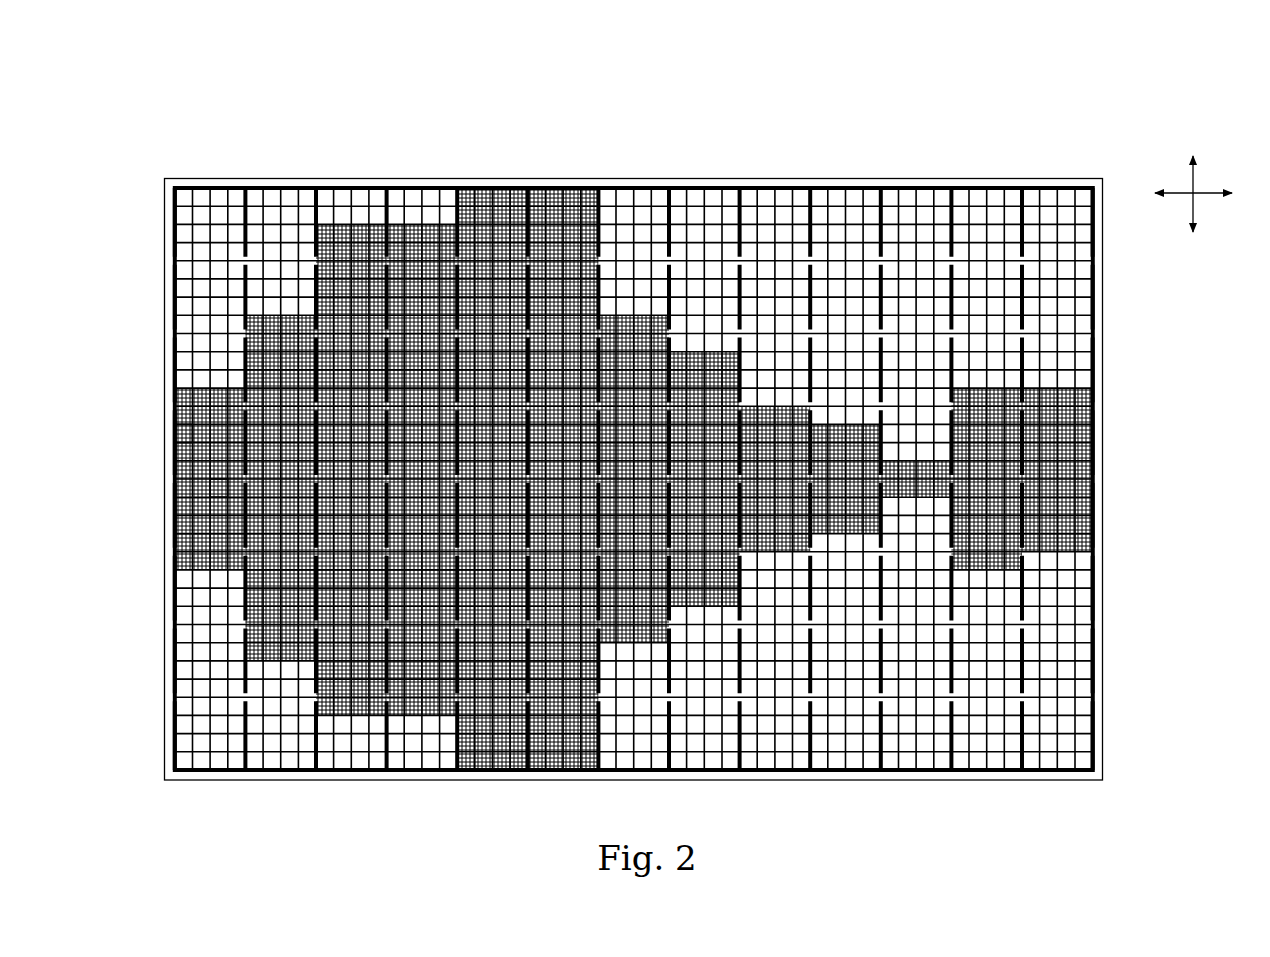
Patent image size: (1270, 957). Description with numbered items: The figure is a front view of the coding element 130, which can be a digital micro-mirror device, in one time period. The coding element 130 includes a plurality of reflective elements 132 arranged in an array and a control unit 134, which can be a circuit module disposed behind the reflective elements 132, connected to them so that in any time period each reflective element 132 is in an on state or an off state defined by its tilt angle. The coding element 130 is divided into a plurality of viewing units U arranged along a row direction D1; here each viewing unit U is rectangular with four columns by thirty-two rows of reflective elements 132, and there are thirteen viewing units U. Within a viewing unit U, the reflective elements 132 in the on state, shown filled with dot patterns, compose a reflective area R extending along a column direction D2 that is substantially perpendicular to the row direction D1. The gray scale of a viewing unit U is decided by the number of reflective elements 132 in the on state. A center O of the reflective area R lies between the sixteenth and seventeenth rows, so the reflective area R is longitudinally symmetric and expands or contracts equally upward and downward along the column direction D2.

The coding element 130 is at (58, 160).
The reflective element 132 is at (184, 200).
The control unit 134 is at (190, 187).
The viewing unit U is at (235, 186).
The reflective area R is at (181, 435).
The center of the reflective area O is at (209, 481).
The row direction D1 is at (1212, 194).
The column direction D2 is at (1193, 177).